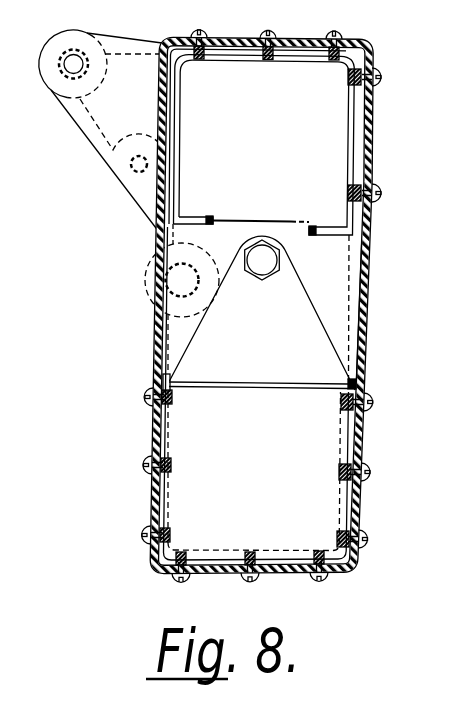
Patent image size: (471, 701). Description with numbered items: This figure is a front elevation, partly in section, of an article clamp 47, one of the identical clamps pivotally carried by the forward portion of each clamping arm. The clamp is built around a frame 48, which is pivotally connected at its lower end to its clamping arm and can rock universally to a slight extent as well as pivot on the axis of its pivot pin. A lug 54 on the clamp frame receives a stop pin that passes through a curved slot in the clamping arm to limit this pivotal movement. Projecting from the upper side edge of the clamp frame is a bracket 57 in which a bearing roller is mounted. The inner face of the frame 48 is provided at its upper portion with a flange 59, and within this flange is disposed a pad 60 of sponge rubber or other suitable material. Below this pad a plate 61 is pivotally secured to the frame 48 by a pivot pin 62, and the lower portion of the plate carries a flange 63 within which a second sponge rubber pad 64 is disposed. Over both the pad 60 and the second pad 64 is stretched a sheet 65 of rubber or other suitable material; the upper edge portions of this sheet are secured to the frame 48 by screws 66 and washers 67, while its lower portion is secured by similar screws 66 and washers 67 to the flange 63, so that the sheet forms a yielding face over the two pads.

The article clamp 47 is at (141, 358).
The frame 48 is at (341, 272).
The lug 54 is at (148, 282).
The bracket 57 is at (84, 134).
The flange 59 is at (356, 152).
The pad 60 is at (257, 136).
The plate 61 is at (307, 318).
The pivot pin 62 is at (268, 259).
The flange 63 is at (163, 430).
The second sponge rubber pad 64 is at (259, 432).
The sheet 65 is at (362, 335).
The screws 66 is at (206, 30).
The washers 67 is at (276, 31).